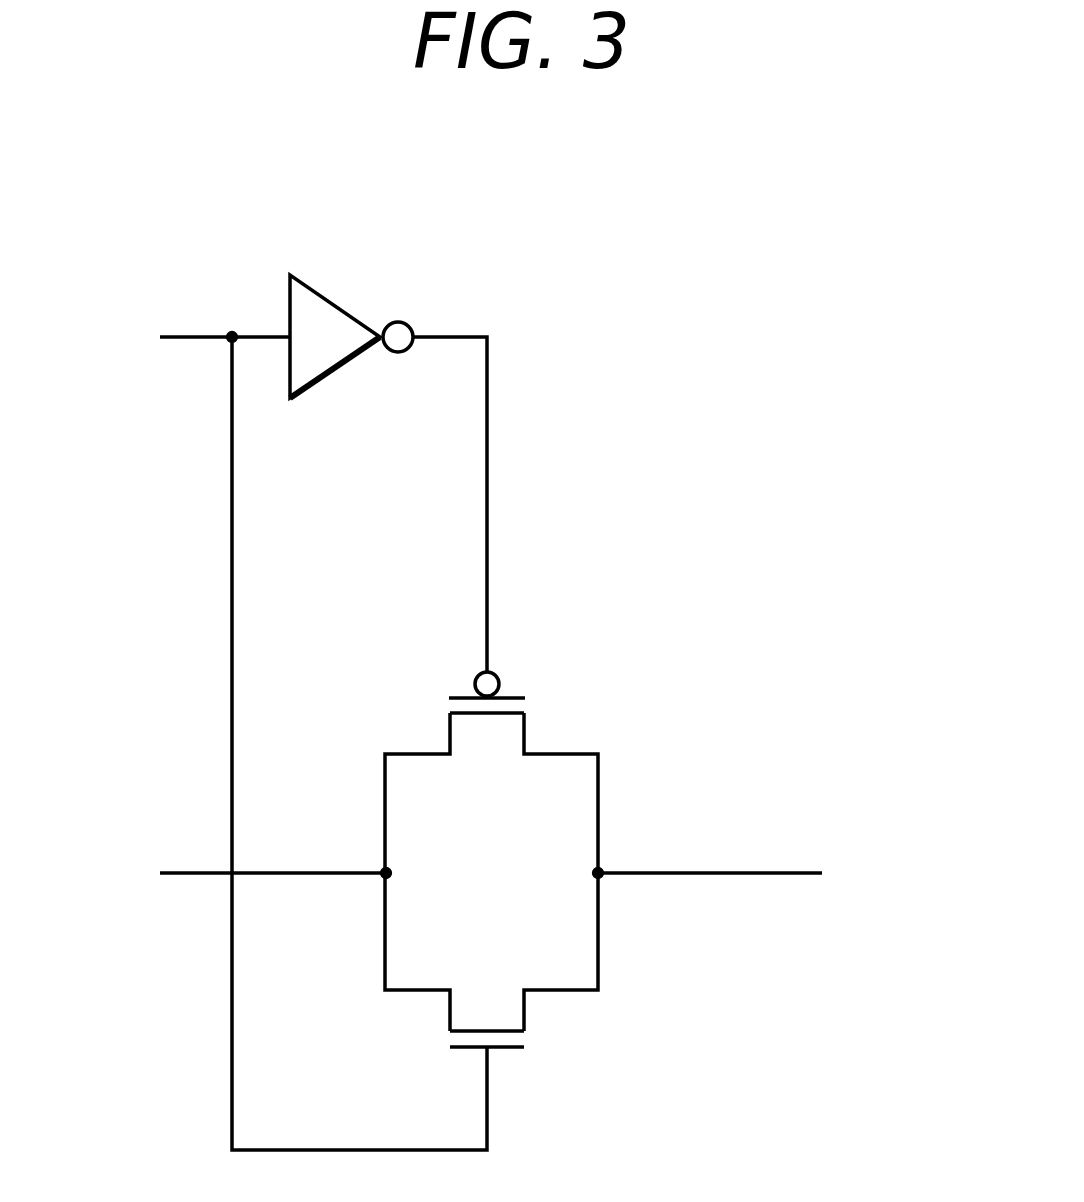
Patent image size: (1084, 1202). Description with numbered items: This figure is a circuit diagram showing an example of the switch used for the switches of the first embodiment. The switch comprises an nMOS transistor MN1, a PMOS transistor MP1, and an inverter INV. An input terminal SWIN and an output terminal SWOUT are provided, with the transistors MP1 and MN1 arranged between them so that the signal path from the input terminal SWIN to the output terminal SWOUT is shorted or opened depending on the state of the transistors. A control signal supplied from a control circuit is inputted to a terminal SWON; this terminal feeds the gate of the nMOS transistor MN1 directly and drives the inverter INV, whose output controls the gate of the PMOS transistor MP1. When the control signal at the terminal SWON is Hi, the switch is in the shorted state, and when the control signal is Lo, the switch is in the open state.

The terminal SWON is at (267, 732).
The inverter INV is at (388, 473).
The PMOS transistor MP1 is at (500, 772).
The nMOS transistor MN1 is at (500, 975).
The input terminal SWIN is at (223, 874).
The output terminal SWOUT is at (780, 873).